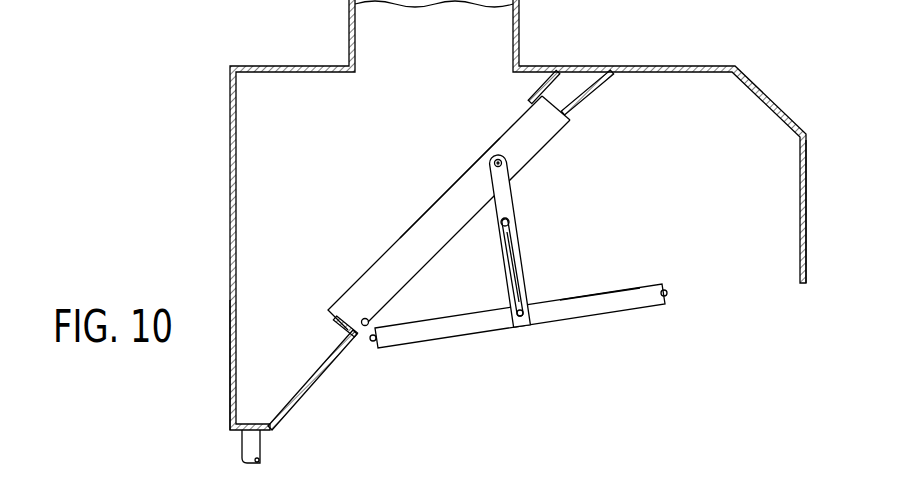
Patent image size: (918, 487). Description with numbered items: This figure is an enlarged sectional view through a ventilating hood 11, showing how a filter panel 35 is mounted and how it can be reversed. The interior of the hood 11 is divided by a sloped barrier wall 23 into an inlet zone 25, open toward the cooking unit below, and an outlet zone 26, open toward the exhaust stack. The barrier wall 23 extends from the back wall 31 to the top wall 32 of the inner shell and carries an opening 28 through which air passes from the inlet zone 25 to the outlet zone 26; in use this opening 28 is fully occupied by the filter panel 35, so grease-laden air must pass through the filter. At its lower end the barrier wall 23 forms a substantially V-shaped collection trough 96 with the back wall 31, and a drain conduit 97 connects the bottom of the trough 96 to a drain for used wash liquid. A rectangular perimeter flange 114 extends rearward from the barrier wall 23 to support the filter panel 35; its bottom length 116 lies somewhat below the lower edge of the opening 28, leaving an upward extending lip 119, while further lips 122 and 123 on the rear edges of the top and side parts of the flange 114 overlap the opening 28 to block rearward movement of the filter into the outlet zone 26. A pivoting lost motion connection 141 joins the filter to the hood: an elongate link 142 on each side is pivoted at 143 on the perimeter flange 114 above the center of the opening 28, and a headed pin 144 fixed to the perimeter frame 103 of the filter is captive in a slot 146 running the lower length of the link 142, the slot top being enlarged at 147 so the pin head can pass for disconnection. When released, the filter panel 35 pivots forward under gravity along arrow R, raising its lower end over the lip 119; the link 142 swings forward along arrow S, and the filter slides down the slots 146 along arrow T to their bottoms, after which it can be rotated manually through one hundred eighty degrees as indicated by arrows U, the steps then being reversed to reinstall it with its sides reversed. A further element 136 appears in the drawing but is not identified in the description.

The ventilating hood 11 is at (758, 46).
The outlet zone 26 is at (268, 156).
The back wall 31 is at (232, 373).
The drain conduit 97 is at (215, 435).
The top wall 32 is at (686, 65).
The inlet zone 25 is at (771, 274).
The barrier wall 23 is at (603, 92).
The lip 122 is at (532, 97).
The opening 28 is at (553, 108).
The lip 123 is at (459, 180).
The perimeter flange 114 is at (427, 225).
The bottom length 116 is at (336, 320).
The collection trough 96 is at (262, 403).
The lip 119 is at (363, 328).
The filter panel 35 is at (623, 318).
The perimeter frame 103 is at (595, 304).
The link 142 is at (503, 191).
The pivot 143 is at (492, 160).
The pivoting lost motion connection 141 is at (532, 291).
The slot 146 is at (518, 252).
The enlarged slot top 147 is at (511, 222).
The headed pin 144 is at (528, 320).
The element 136 is at (138, 484).
The arrow R is at (398, 315).
The arrow S is at (488, 215).
The arrow T is at (488, 262).
The arrows U is at (604, 189).